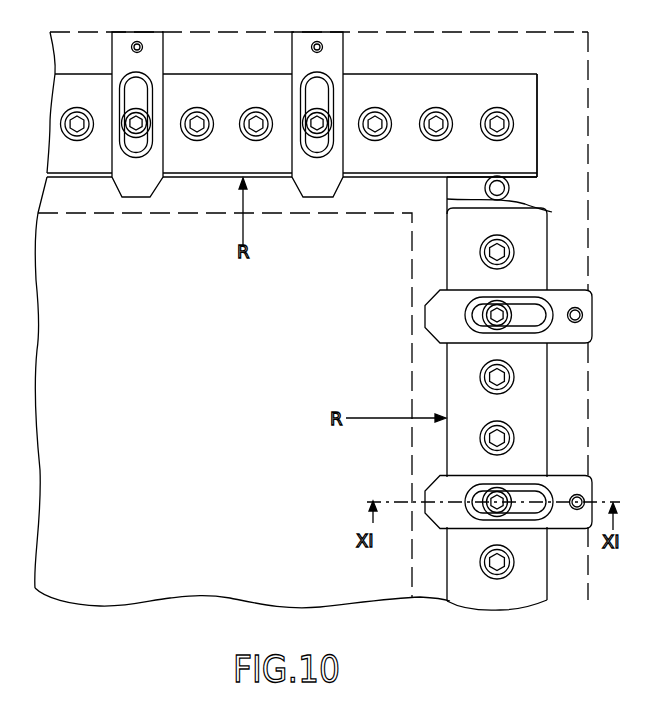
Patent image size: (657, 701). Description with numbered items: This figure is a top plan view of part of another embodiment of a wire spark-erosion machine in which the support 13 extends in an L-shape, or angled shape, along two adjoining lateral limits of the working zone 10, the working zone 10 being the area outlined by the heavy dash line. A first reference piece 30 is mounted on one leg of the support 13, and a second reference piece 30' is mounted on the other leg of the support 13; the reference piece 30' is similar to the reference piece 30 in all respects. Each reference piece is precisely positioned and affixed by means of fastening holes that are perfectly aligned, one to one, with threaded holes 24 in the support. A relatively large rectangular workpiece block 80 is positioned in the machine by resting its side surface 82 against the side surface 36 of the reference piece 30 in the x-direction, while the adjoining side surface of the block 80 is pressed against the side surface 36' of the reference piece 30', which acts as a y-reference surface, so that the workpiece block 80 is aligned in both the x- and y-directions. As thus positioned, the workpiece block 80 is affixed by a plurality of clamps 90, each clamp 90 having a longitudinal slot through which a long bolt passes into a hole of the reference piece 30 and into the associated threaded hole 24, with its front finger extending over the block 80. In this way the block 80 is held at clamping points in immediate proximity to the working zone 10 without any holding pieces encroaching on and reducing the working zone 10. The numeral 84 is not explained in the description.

The support 13 is at (503, 33).
The working zone 10 is at (367, 203).
The second reference piece 30' is at (292, 107).
The bar end portion 84 is at (97, 172).
The side surface of reference piece 30' 36' is at (512, 129).
The threaded hole 24 is at (511, 189).
The side surface of workpiece block 82 is at (511, 210).
The reference piece 30 is at (517, 389).
The clamp 90 is at (566, 470).
The side surface of reference piece 30 36 is at (477, 596).
The workpiece block 80 is at (146, 611).